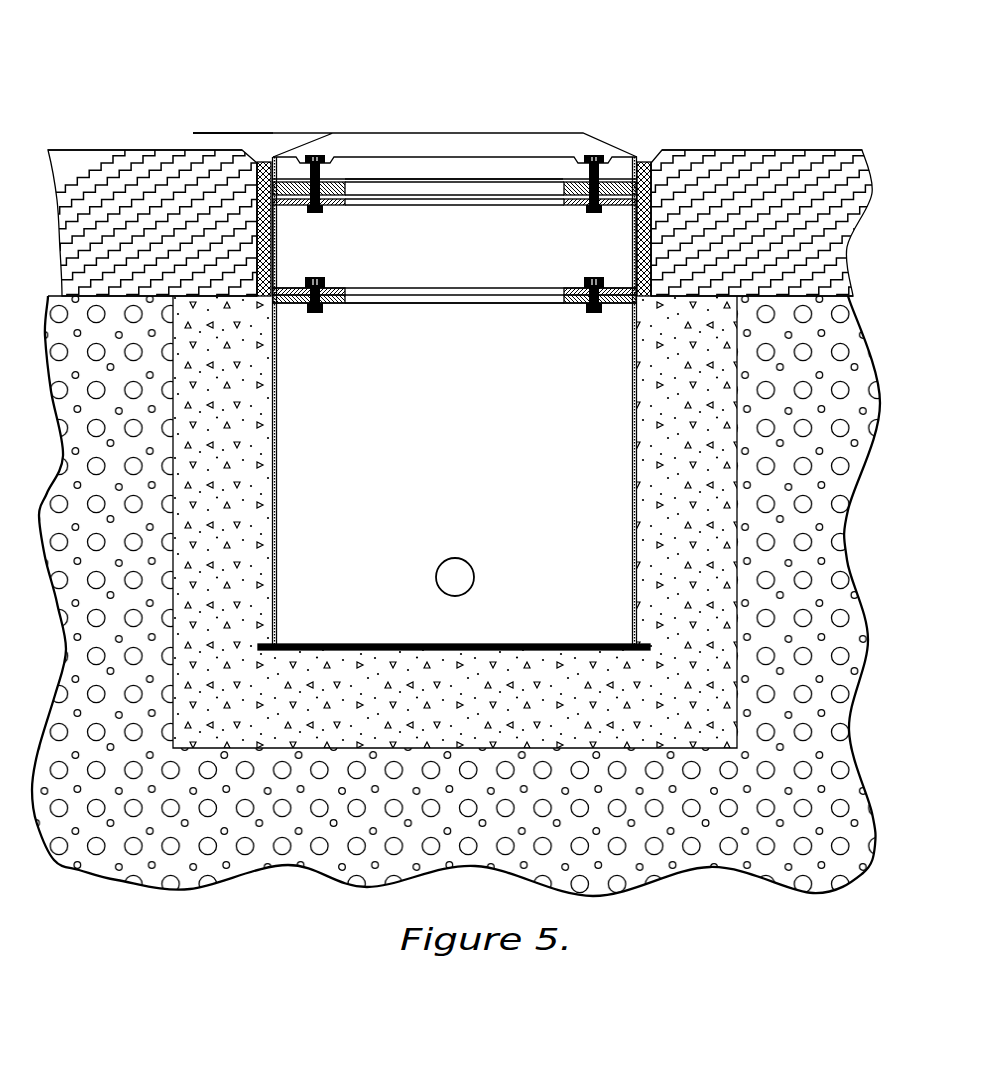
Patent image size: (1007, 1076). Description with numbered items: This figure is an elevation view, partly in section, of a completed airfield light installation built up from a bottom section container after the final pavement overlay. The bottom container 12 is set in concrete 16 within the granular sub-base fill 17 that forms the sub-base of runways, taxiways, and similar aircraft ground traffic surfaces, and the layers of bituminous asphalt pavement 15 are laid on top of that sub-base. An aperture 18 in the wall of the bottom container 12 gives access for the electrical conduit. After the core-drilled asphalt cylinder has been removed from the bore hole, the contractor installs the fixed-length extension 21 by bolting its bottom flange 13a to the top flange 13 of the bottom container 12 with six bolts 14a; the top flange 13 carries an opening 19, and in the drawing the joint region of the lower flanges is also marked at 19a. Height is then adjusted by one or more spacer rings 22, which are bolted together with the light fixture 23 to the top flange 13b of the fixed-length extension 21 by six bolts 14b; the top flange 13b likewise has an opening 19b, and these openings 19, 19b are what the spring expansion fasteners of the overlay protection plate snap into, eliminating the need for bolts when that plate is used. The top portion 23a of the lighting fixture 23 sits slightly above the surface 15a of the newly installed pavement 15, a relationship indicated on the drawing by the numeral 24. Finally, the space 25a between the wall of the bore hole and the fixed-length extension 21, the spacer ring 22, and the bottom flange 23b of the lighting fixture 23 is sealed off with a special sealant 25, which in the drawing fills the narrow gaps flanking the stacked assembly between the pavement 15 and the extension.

The bottom container 12 is at (632, 470).
The top flange 13 is at (292, 308).
The bottom flange 13a is at (285, 287).
The top flange 13b is at (343, 207).
The bolts 14a is at (315, 313).
The bolts 14b is at (318, 213).
The asphalt pavement 15 is at (503, 224).
The surface of pavement 15a is at (64, 150).
The concrete 16 is at (455, 520).
The granular sub-base fill 17 is at (460, 600).
The aperture 18 is at (470, 562).
The opening 19 is at (388, 305).
The lower gasket 19a is at (412, 304).
The opening 19b is at (434, 204).
The fixed-length extension 21 is at (454, 246).
The spacer ring 22 is at (356, 179).
The light fixture 23 is at (424, 133).
The top portion of lighting fixture 23a is at (205, 133).
The bottom flange of lighting fixture 23b is at (452, 170).
The height indication 24 is at (197, 143).
The sealant 25 is at (261, 162).
The space 25a is at (257, 253).